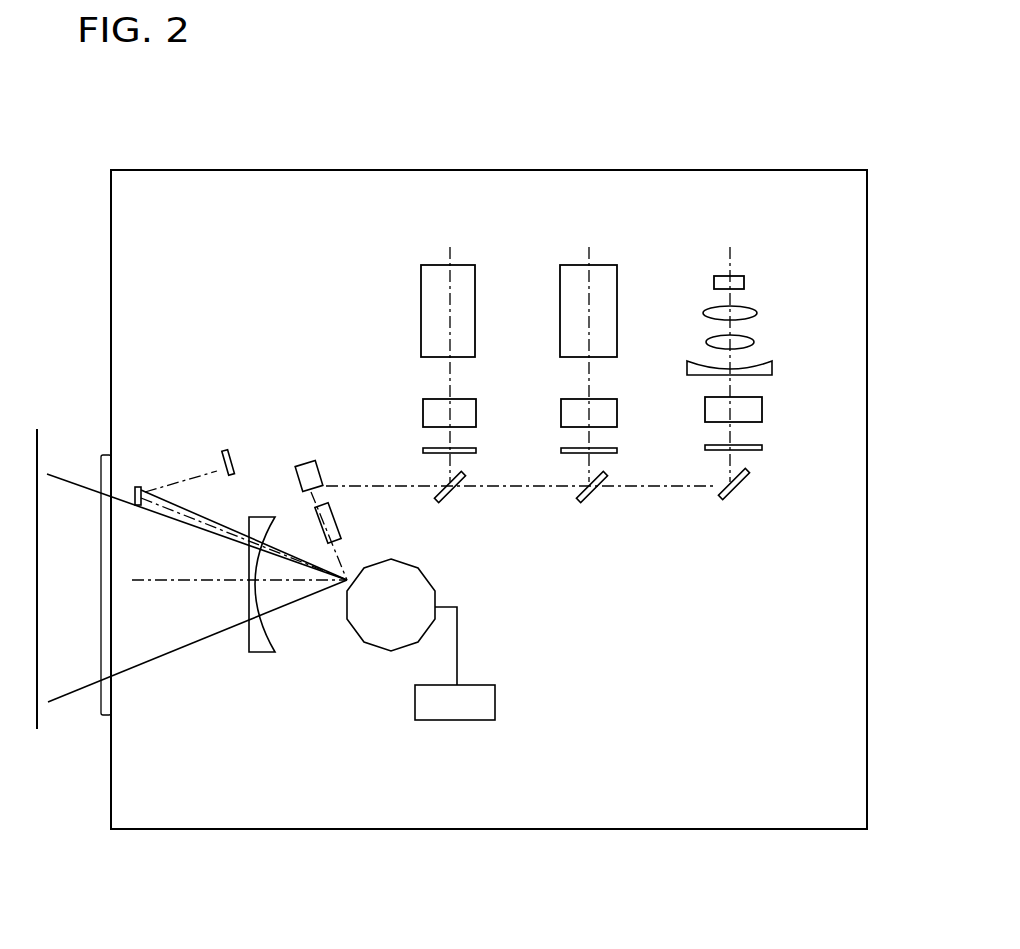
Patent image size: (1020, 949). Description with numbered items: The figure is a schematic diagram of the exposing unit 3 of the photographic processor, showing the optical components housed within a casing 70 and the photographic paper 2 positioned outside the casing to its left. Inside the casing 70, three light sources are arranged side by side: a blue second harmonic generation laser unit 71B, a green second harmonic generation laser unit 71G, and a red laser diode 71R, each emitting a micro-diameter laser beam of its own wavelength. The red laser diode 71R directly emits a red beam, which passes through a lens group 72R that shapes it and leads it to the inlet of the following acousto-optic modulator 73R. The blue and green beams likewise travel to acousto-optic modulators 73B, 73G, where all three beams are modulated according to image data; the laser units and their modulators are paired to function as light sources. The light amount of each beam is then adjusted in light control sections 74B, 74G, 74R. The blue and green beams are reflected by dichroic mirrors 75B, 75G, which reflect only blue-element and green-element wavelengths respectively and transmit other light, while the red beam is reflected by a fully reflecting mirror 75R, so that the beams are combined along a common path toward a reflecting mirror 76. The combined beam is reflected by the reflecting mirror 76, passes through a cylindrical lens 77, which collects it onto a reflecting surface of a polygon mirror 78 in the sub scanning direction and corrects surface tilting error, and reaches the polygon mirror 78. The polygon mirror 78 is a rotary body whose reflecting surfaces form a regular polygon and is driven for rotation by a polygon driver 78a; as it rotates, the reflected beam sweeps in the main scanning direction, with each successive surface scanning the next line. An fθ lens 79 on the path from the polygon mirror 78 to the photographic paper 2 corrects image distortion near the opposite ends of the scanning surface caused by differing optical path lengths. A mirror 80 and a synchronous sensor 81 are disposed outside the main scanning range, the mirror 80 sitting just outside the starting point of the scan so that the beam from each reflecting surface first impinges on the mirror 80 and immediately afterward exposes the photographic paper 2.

The photographic paper 2 is at (36, 727).
The exposing unit 3 is at (784, 133).
The casing 70 is at (597, 168).
The blue second harmonic generation laser unit 71B is at (465, 278).
The green second harmonic generation laser unit 71G is at (603, 278).
The red laser diode 71R is at (735, 280).
The lens group 72R is at (772, 302).
The acousto-optic modulator 73B is at (467, 408).
The acousto-optic modulator 73G is at (605, 408).
The acousto-optic modulator 73R is at (753, 409).
The light control section 74B is at (460, 448).
The light control section 74G is at (600, 448).
The light control section 74R is at (755, 445).
The dichroic mirror 75B is at (452, 492).
The dichroic mirror 75G is at (592, 492).
The mirror 75R is at (732, 492).
The reflecting mirror 76 is at (313, 471).
The cylindrical lens 77 is at (338, 518).
The polygon mirror 78 is at (380, 638).
The polygon driver 78a is at (493, 700).
The fθ lens 79 is at (263, 645).
The mirror 80 is at (138, 484).
The synchronous sensor 81 is at (232, 452).